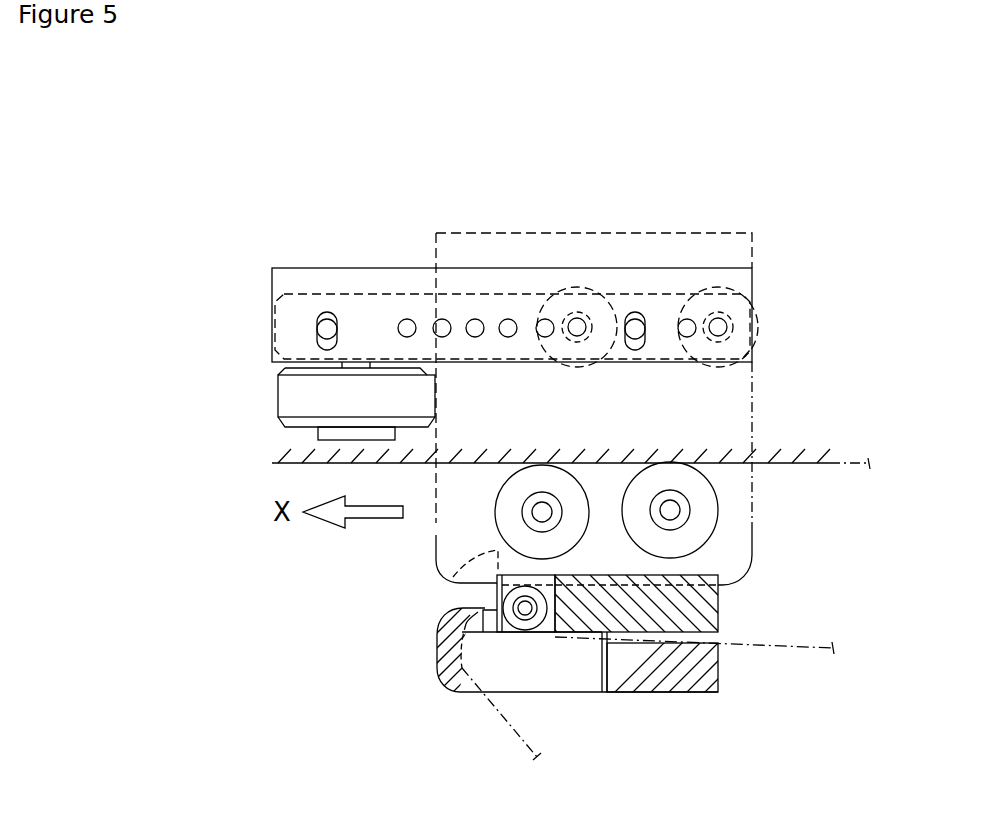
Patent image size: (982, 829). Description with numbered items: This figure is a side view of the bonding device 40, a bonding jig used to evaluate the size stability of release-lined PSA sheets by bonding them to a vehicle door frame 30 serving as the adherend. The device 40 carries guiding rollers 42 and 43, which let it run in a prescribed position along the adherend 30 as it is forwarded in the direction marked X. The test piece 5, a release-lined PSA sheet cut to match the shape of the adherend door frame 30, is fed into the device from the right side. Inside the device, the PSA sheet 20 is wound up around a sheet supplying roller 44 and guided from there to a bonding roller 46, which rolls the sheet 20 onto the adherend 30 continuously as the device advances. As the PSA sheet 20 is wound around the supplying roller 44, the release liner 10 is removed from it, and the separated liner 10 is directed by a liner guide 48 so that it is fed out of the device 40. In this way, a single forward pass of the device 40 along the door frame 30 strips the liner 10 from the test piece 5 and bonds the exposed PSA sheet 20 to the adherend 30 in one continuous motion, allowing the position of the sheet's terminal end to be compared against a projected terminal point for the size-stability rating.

The test piece 5 is at (780, 649).
The release liner 10 is at (515, 745).
The PSA sheet 20 is at (453, 577).
The vehicle door frame 30 is at (812, 464).
The bonding device 40 is at (833, 266).
The guiding roller 42 is at (280, 403).
The guiding roller 43 is at (695, 310).
The sheet supplying roller 44 is at (528, 626).
The bonding roller 46 is at (500, 500).
The liner guide 48 is at (437, 655).